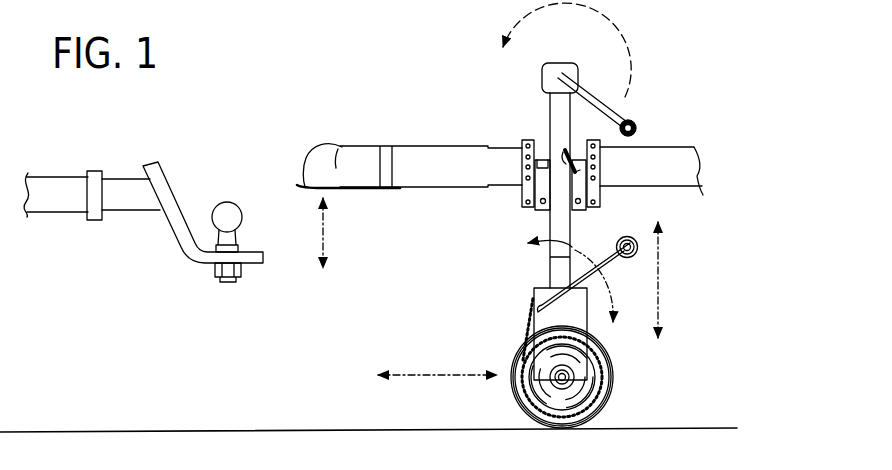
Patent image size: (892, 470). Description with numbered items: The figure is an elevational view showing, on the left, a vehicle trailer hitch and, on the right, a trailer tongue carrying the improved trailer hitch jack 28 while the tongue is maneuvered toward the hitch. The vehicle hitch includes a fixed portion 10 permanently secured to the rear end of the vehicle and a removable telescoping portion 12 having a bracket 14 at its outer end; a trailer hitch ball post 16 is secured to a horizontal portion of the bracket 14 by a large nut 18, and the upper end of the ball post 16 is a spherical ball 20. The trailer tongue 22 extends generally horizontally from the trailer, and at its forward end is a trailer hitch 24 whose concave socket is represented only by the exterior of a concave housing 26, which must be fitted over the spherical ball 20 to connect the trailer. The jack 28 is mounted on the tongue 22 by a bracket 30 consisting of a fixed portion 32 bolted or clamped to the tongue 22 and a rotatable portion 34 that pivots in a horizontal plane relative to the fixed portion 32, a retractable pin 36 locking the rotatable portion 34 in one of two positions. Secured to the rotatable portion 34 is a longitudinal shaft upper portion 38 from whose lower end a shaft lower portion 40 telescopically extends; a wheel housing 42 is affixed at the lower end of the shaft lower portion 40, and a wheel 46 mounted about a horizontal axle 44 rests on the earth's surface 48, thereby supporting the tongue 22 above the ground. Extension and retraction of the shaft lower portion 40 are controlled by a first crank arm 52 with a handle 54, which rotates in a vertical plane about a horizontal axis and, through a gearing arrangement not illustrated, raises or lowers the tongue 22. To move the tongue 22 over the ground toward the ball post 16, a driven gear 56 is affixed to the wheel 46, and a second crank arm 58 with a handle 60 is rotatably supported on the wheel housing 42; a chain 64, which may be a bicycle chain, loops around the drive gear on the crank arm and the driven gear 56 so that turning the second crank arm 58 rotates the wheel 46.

The fixed portion 10 is at (60, 183).
The removable telescoping portion 12 is at (127, 183).
The bracket 14 is at (172, 212).
The trailer hitch ball post 16 is at (245, 240).
The large nut 18 is at (213, 277).
The spherical ball 20 is at (222, 201).
The trailer tongue 22 is at (681, 147).
The trailer hitch 24 is at (358, 152).
The concave housing 26 is at (318, 150).
The trailer hitch jack 28 is at (645, 70).
The bracket 30 is at (473, 207).
The fixed portion 32 is at (527, 143).
The rotatable portion 34 is at (547, 188).
The retractable pin 36 is at (574, 150).
The shaft upper portion 38 is at (555, 135).
The shaft lower portion 40 is at (557, 269).
The wheel housing 42 is at (508, 294).
The horizontal axle 44 is at (513, 402).
The wheel 46 is at (607, 411).
The earth's surface 48 is at (712, 428).
The first crank arm 52 is at (598, 96).
The handle 54 is at (637, 133).
The driven gear 56 is at (598, 347).
The second crank arm 58 is at (607, 268).
The handle 60 is at (638, 254).
The chain 64 is at (527, 323).